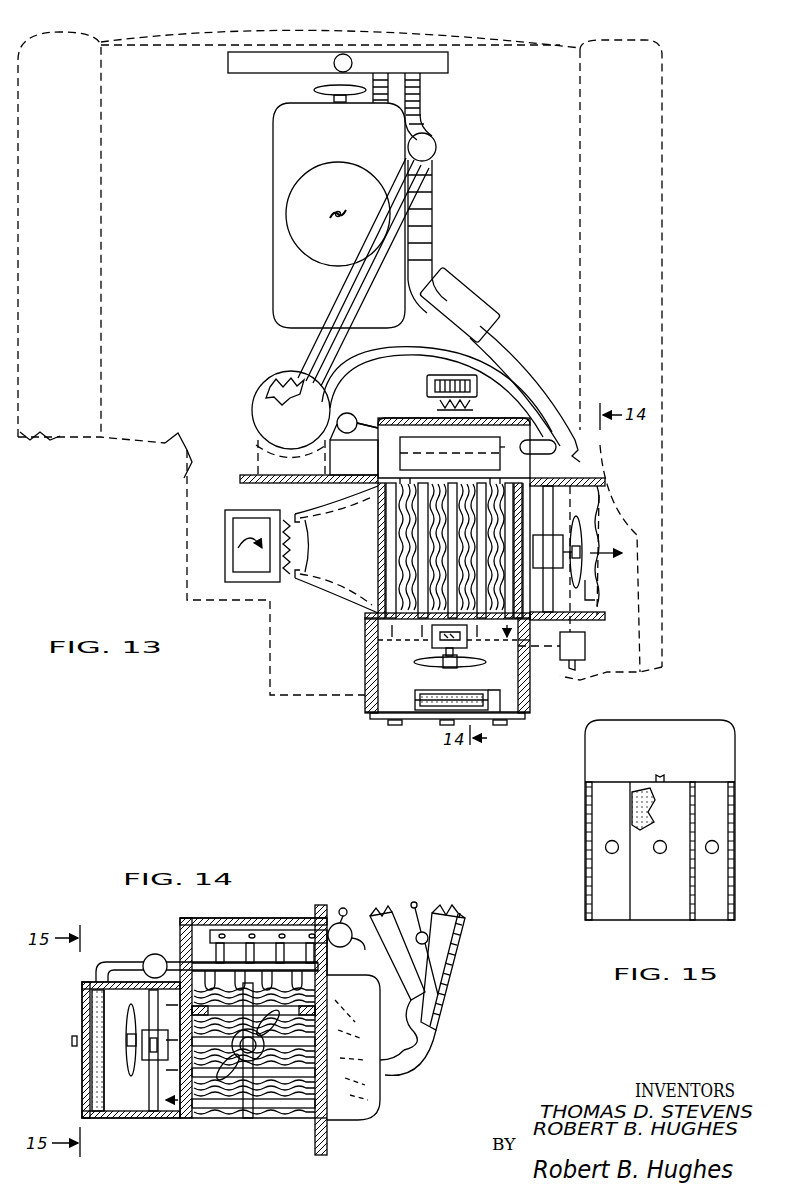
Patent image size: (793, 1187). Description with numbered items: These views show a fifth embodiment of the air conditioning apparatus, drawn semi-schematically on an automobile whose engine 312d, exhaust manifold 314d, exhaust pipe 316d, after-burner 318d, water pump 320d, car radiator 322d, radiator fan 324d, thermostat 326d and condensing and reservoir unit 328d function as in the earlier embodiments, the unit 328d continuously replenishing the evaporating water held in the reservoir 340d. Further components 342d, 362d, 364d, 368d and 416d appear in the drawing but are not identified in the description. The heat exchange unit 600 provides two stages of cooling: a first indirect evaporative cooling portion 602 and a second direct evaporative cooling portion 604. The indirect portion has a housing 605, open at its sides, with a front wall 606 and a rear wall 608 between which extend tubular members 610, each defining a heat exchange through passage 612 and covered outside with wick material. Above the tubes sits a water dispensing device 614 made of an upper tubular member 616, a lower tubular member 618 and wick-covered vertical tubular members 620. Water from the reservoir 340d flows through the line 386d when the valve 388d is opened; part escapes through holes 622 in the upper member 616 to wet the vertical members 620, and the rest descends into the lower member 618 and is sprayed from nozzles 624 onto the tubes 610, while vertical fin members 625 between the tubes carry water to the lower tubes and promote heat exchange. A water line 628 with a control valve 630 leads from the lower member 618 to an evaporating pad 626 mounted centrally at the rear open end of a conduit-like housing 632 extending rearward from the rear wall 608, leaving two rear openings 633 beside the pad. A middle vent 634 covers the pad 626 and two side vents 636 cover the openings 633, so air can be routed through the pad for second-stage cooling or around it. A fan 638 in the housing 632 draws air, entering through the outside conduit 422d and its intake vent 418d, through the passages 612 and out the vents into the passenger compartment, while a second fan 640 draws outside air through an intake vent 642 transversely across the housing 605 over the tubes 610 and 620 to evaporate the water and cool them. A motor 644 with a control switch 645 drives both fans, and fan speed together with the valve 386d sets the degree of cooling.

In FIG. 13, the engine 312d is at (355, 143).
In FIG. 13, the exhaust manifold 314d is at (433, 236).
In FIG. 13, the exhaust pipe 316d is at (505, 330).
In FIG. 13, the after-burner 318d is at (468, 296).
In FIG. 13, the water pump 320d is at (438, 144).
In FIG. 13, the car radiator 322d is at (405, 60).
In FIG. 13, the radiator fan 324d is at (337, 88).
In FIG. 13, the thermostat 326d is at (395, 96).
In FIG. 13, the condensing and reservoir unit 328d is at (253, 410).
In FIG. 13, the reservoir 340d is at (281, 380).
In FIG. 13, the conduit 342d is at (380, 358).
In FIG. 13, the coolant line 362d is at (336, 316).
In FIG. 13, the coolant line 364d is at (322, 298).
In FIG. 13, the pump 368d is at (354, 457).
In FIG. 13, the line 386d is at (345, 413).
In FIG. 14, the line 386d is at (348, 908).
In FIG. 13, the valve 388d is at (378, 422).
In FIG. 14, the valve 388d is at (367, 955).
In FIG. 13, the air intake 416d is at (497, 447).
In FIG. 14, the air intake 416d is at (362, 1082).
In FIG. 13, the intake vent 418d is at (458, 376).
In FIG. 13, the outside conduit 422d is at (464, 404).
In FIG. 13, the heat exchange unit 600 is at (362, 625).
In FIG. 13, the first indirect evaporative cooling portion 602 is at (372, 537).
In FIG. 13, the second direct evaporative cooling portion 604 is at (498, 697).
In FIG. 13, the housing 605 is at (518, 420).
In FIG. 14, the housing 605 is at (196, 960).
In FIG. 13, the front wall 606 is at (490, 482).
In FIG. 14, the front wall 606 is at (332, 1098).
In FIG. 13, the rear wall 608 is at (410, 626).
In FIG. 14, the rear wall 608 is at (180, 1105).
In FIG. 15, the rear wall 608 is at (638, 750).
In FIG. 13, the tubular members 610 is at (490, 524).
In FIG. 14, the tubular members 610 is at (298, 1085).
In FIG. 13, the heat exchange through passage 612 is at (510, 632).
In FIG. 14, the heat exchange through passage 612 is at (322, 1015).
In FIG. 14, the water dispensing device 614 is at (268, 938).
In FIG. 14, the upper tubular member 616 is at (224, 930).
In FIG. 14, the lower tubular member 618 is at (186, 912).
In FIG. 14, the vertical tubular members 620 is at (335, 924).
In FIG. 14, the holes 622 is at (262, 960).
In FIG. 14, the nozzles 624 is at (300, 980).
In FIG. 14, the vertical fin members 625 is at (238, 1090).
In FIG. 13, the evaporating pad 626 is at (445, 694).
In FIG. 14, the evaporating pad 626 is at (95, 1012).
In FIG. 15, the evaporating pad 626 is at (642, 795).
In FIG. 14, the water line 628 is at (112, 962).
In FIG. 15, the water line 628 is at (666, 777).
In FIG. 14, the control valve 630 is at (160, 953).
In FIG. 14, the conduit-like housing 632 is at (135, 1118).
In FIG. 13, the rear openings 633 is at (392, 720).
In FIG. 13, the middle vent 634 is at (440, 715).
In FIG. 14, the middle vent 634 is at (92, 1060).
In FIG. 15, the middle vent 634 is at (672, 891).
In FIG. 13, the side vents 636 is at (512, 720).
In FIG. 15, the side vents 636 is at (603, 882).
In FIG. 13, the fan 638 is at (452, 662).
In FIG. 14, the fan 638 is at (128, 1078).
In FIG. 13, the second fan 640 is at (582, 525).
In FIG. 14, the second fan 640 is at (248, 1062).
In FIG. 13, the intake vent 642 is at (262, 583).
In FIG. 13, the motor 644 is at (585, 647).
In FIG. 13, the control switch 645 is at (577, 669).